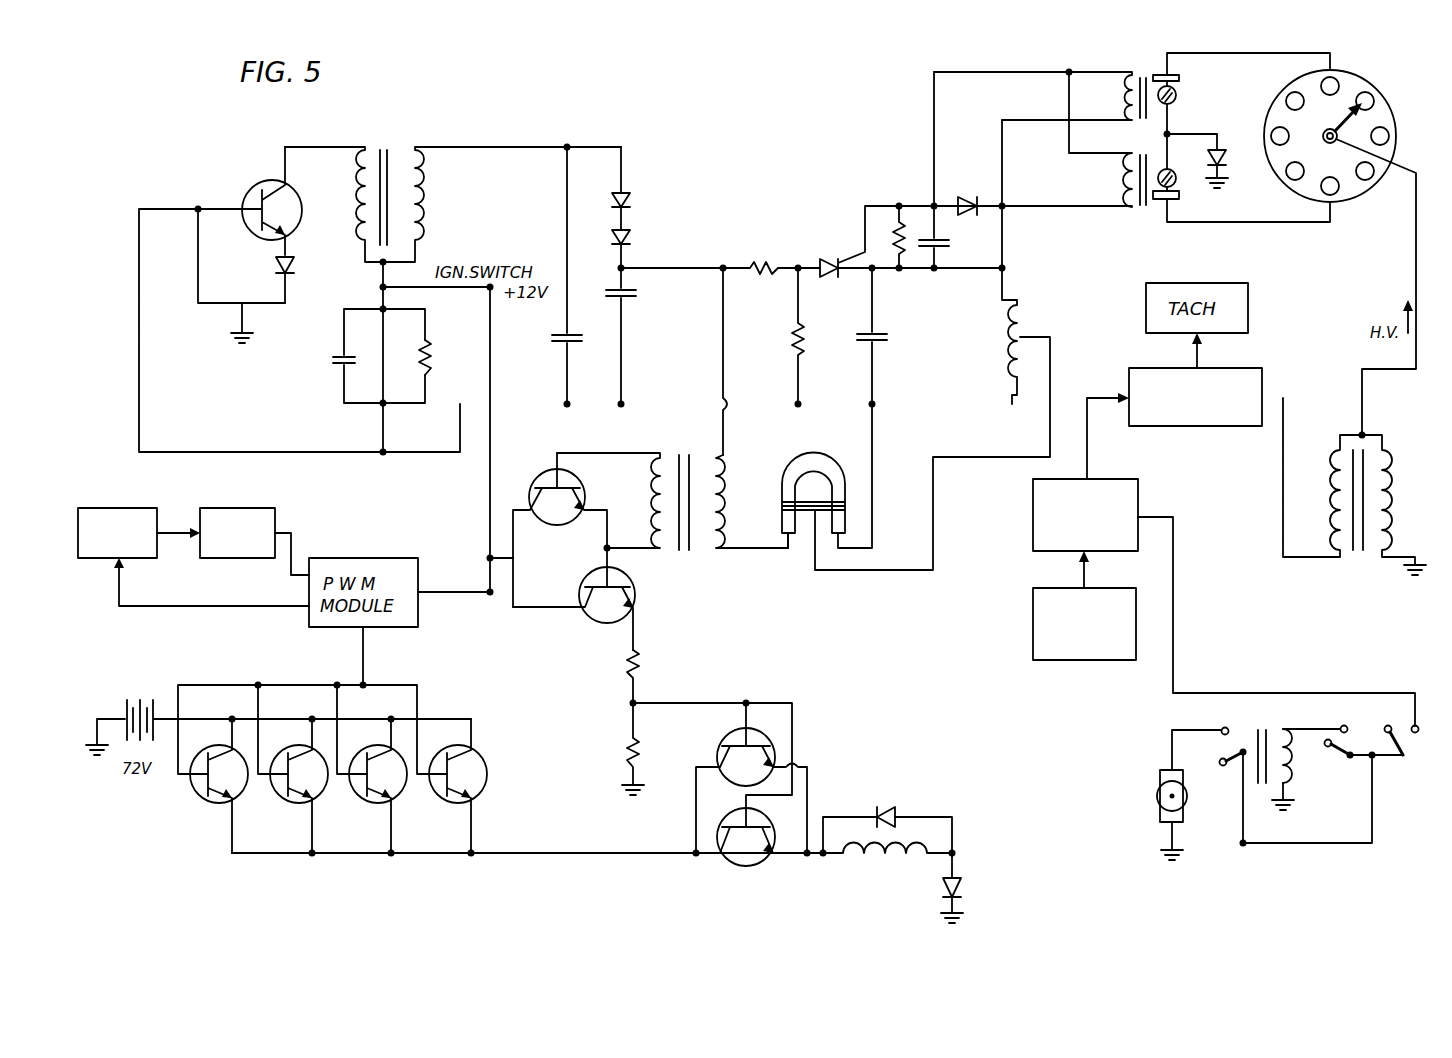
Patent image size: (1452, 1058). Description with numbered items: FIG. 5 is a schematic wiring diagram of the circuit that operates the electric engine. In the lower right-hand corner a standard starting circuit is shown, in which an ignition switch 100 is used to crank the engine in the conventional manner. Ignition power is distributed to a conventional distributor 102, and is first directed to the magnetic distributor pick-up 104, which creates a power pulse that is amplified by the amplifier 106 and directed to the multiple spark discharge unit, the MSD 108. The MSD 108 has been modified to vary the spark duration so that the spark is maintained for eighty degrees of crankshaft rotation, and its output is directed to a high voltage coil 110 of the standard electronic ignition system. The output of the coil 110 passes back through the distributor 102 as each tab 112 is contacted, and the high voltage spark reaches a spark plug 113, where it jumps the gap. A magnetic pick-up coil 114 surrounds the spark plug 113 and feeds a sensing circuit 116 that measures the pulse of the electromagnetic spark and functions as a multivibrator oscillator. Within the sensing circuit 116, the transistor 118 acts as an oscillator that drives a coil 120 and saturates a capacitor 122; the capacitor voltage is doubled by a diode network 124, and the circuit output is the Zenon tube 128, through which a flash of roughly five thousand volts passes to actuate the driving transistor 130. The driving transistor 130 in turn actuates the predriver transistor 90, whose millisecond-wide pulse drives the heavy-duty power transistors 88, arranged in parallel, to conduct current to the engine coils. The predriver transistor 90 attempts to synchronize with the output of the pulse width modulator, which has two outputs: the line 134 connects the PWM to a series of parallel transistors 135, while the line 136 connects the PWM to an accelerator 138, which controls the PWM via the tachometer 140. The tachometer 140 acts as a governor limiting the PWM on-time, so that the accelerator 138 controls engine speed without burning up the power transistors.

The switching transistors 88 is at (722, 750).
The driving transistor 90 is at (593, 612).
The ignition switch 100 is at (1384, 808).
The distributor 102 is at (1358, 251).
The magnetic distributor pick-up 104 is at (1092, 660).
The amplifier 106 is at (1140, 502).
The multiple spark discharge (MSD) unit 108 is at (1264, 380).
The high voltage coil 110 is at (1400, 438).
The tab 112 is at (1388, 130).
The spark plug 113 is at (1160, 72).
The magnetic pick-up coil 114 is at (1100, 58).
The sensing circuit 116 is at (690, 138).
The transistor 118 is at (262, 190).
The coil 120 is at (430, 210).
The capacitor 122 is at (862, 343).
The diode network 124 is at (648, 212).
The Zenon tube 128 is at (832, 437).
The driving transistor 130 is at (538, 478).
The line 134 is at (365, 681).
The transistors 135 is at (498, 750).
The line 136 is at (170, 606).
The accelerator 138 is at (105, 508).
The tachometer 140 is at (250, 508).